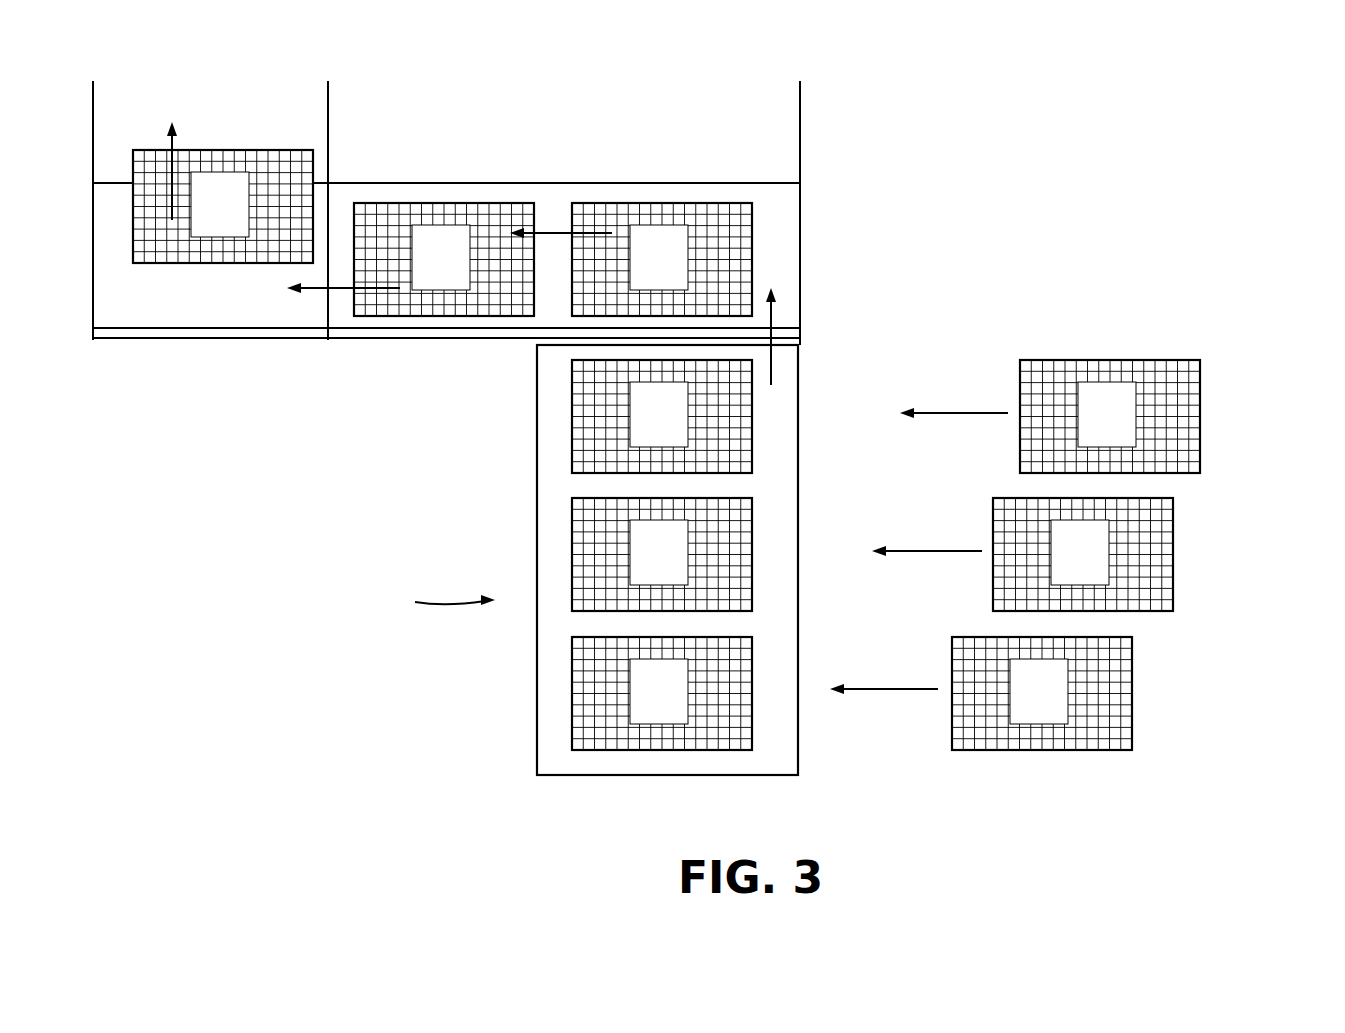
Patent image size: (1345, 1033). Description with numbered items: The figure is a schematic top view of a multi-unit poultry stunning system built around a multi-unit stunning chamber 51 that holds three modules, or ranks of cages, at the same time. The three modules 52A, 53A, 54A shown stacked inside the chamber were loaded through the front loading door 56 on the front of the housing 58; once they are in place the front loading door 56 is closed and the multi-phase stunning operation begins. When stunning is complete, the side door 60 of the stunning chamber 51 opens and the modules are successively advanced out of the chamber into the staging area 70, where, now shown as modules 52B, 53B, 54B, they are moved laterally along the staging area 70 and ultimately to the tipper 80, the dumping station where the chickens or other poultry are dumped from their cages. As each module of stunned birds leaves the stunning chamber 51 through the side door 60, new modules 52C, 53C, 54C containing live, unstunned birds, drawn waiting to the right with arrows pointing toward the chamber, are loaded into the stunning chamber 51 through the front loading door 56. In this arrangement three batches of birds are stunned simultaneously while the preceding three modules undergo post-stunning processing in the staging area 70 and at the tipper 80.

The tipper 80 is at (152, 69).
The staging area 70 is at (780, 153).
The module in staging area 52B is at (203, 263).
The module in staging area 53B is at (383, 203).
The module in staging area 54B is at (688, 203).
The side door 60 is at (578, 341).
The front loading door 56 is at (800, 387).
The housing 58 is at (732, 775).
The module 52A is at (573, 445).
The module 53A is at (573, 522).
The module 54A is at (573, 695).
The multi-unit stunning chamber 51 is at (436, 600).
The new module 52C is at (1120, 360).
The new module 53C is at (1172, 570).
The new module 54C is at (1132, 720).